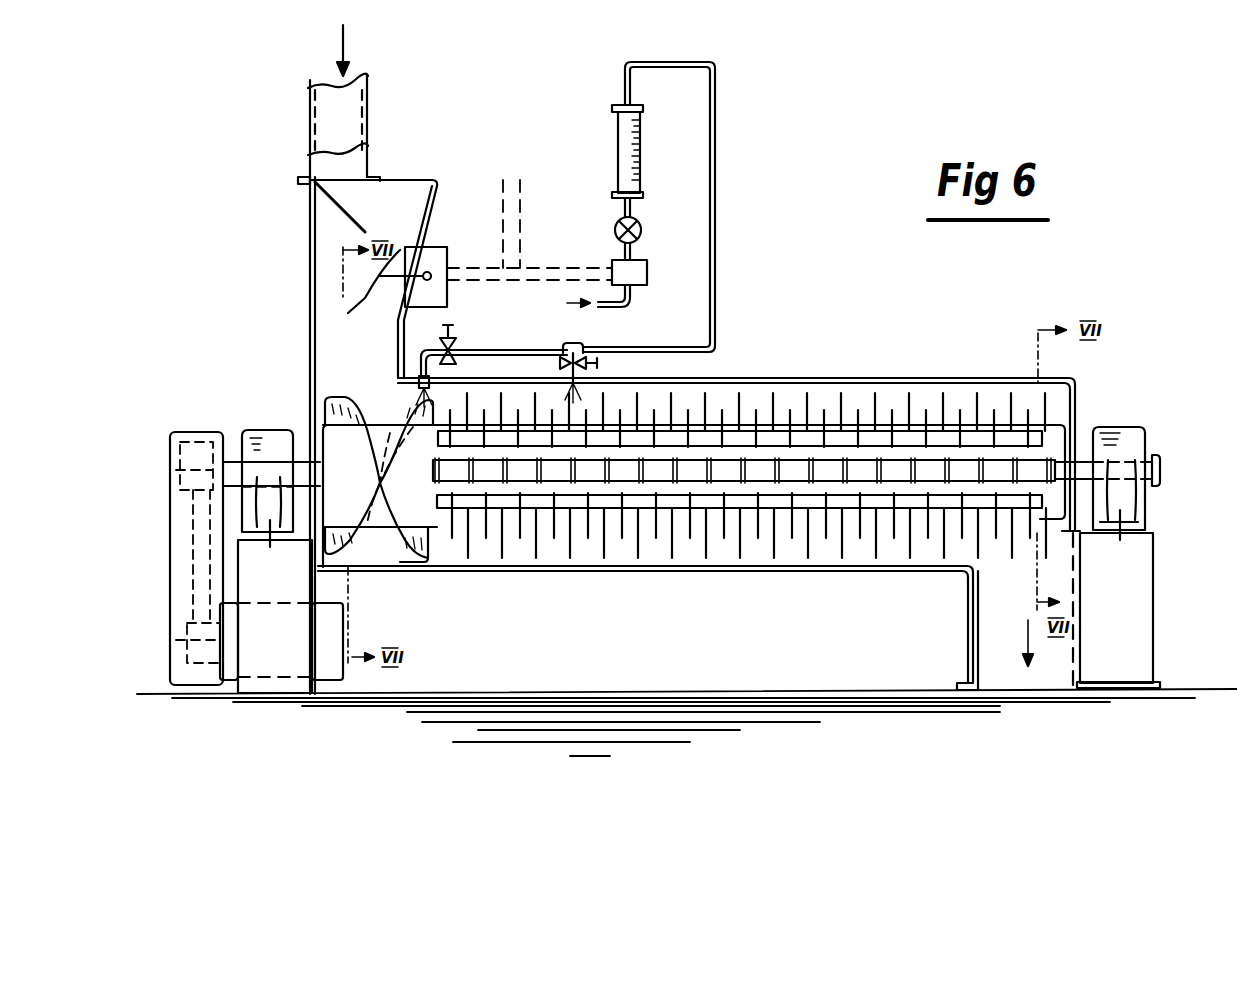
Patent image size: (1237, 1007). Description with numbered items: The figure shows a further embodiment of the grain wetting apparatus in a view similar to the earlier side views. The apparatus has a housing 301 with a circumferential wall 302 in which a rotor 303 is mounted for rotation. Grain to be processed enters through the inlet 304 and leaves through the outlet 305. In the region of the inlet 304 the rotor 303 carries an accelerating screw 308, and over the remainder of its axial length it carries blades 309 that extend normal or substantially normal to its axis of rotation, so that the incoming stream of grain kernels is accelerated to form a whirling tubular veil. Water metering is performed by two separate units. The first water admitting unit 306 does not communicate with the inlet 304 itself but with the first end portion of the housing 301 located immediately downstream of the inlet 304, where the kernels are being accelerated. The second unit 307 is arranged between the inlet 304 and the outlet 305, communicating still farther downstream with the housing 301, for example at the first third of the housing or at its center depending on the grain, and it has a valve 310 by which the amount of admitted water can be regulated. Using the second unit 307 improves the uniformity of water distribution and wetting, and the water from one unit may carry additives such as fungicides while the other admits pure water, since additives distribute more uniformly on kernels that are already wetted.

The housing 301 is at (310, 345).
The circumferential wall 302 is at (865, 378).
The rotor 303 is at (973, 455).
The inlet 304 is at (335, 303).
The outlet 305 is at (1070, 533).
The first water admitting unit 306 is at (440, 380).
The second water admitting unit 307 is at (571, 357).
The accelerating screw 308 is at (423, 562).
The blades 309 is at (665, 540).
The valve 310 is at (584, 362).